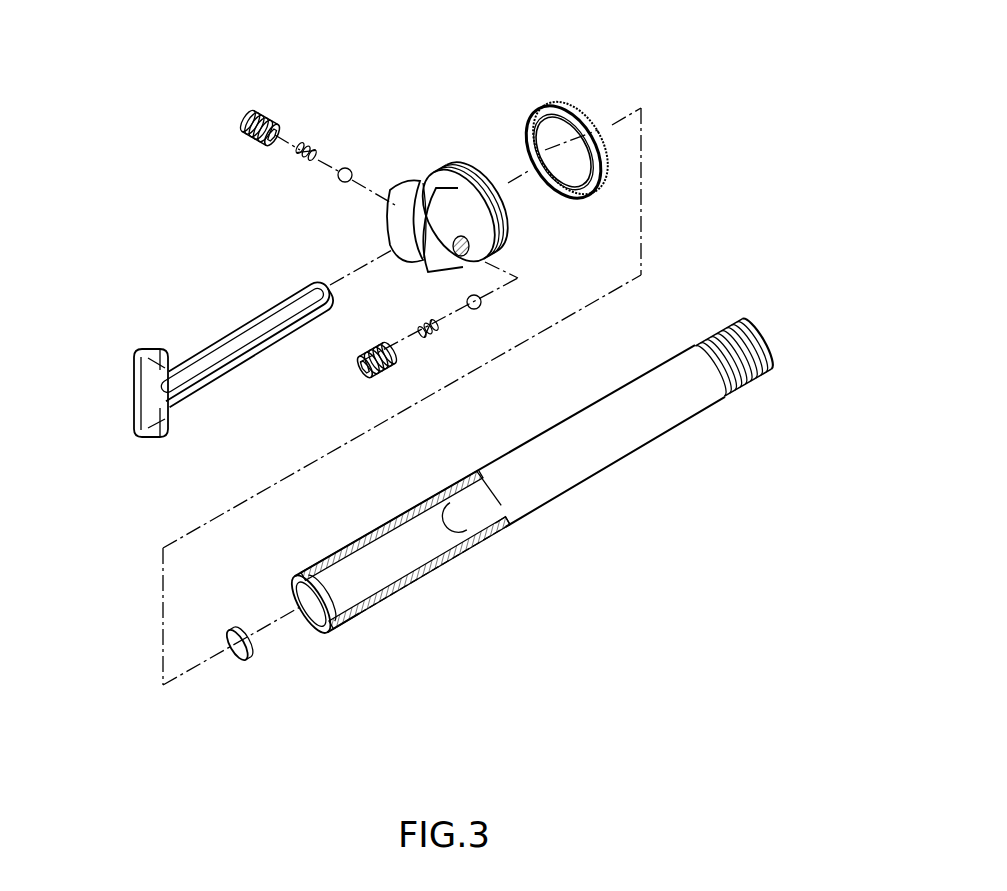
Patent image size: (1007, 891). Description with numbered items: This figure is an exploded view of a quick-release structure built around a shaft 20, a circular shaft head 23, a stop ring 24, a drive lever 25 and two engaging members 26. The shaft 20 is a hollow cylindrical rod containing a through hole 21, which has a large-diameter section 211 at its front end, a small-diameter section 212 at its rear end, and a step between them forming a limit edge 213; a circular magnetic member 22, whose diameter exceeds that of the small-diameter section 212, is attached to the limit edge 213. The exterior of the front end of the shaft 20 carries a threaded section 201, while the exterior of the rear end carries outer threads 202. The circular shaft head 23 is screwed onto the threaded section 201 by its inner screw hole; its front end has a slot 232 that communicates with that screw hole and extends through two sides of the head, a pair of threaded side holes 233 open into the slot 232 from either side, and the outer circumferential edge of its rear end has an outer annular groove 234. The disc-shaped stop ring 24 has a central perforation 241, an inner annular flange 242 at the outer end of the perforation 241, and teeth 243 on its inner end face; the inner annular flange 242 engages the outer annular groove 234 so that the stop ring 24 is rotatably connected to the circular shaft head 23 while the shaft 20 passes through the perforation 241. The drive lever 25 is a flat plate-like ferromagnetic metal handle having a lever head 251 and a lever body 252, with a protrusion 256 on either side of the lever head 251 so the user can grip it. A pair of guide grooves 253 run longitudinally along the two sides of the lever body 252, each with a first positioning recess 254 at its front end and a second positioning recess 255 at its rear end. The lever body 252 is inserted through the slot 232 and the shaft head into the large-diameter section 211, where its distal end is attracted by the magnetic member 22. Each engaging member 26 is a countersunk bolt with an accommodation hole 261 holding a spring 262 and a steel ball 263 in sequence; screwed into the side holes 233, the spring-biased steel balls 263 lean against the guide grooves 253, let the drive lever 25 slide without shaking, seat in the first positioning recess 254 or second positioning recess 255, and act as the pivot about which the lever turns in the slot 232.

The shaft 20 is at (566, 509).
The threaded section 201 is at (310, 603).
The outer threads 202 is at (752, 387).
The through hole 21 is at (447, 578).
The large-diameter section 211 is at (367, 570).
The small-diameter section 212 is at (507, 510).
The limit edge 213 is at (473, 533).
The magnetic member 22 is at (238, 653).
The circular shaft head 23 is at (417, 164).
The slot 232 is at (412, 225).
The side hole 233 is at (469, 240).
The outer annular groove 234 is at (477, 168).
The stop ring 24 is at (606, 125).
The perforation 241 is at (603, 148).
The inner annular flange 242 is at (530, 130).
The teeth 243 is at (580, 108).
The drive lever 25 is at (194, 355).
The lever head 251 is at (142, 404).
The lever body 252 is at (263, 317).
The guide groove 253 is at (222, 355).
The first positioning recess 254 is at (173, 403).
The second positioning recess 255 is at (308, 320).
The protrusion 256 is at (153, 348).
The engaging member 26 is at (282, 258).
The accommodation hole 261 is at (273, 123).
The spring 262 is at (305, 148).
The steel ball 263 is at (348, 167).